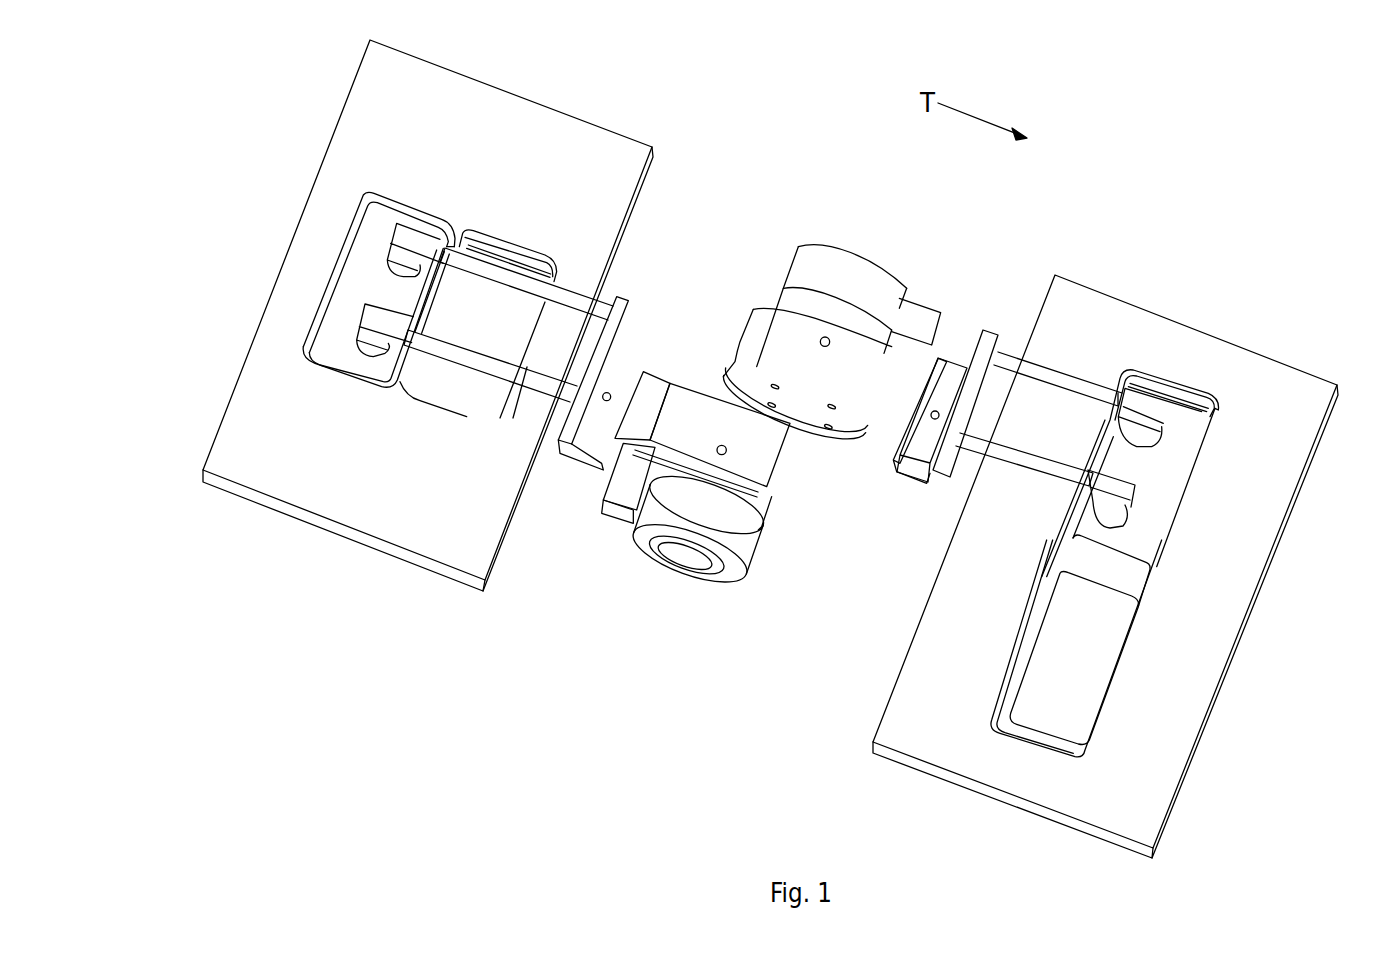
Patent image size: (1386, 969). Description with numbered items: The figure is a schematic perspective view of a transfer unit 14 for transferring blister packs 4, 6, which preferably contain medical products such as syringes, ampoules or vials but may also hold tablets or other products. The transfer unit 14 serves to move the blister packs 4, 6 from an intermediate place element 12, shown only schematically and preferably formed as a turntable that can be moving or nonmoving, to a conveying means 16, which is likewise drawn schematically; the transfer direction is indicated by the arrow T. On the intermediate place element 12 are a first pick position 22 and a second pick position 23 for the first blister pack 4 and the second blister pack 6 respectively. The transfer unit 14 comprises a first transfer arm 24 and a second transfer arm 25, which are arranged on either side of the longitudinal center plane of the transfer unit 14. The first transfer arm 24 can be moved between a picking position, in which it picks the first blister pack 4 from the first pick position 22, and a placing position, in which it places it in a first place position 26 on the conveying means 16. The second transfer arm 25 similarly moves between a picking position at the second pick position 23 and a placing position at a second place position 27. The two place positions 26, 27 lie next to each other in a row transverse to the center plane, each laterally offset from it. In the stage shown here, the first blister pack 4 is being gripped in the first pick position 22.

The first blister pack 4 is at (358, 293).
The second blister pack 6 is at (1170, 492).
The intermediate place element 12 is at (370, 493).
The transfer unit 14 is at (797, 181).
The conveying means 16 is at (928, 708).
The first pick position 22 is at (367, 197).
The second pick position 23 is at (520, 257).
The first transfer arm 24 is at (687, 508).
The second transfer arm 25 is at (790, 333).
The first place position 26 is at (1078, 653).
The second place position 27 is at (1183, 393).